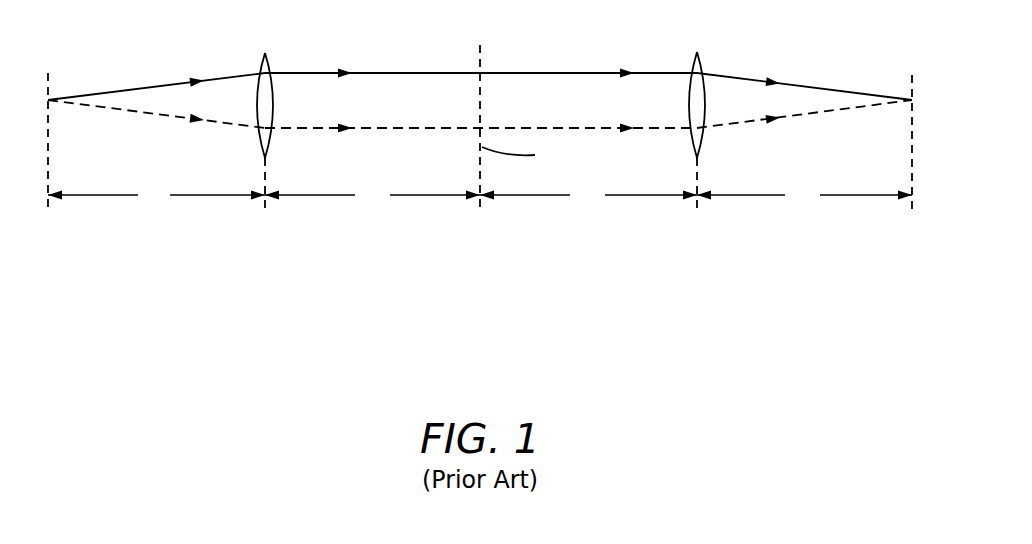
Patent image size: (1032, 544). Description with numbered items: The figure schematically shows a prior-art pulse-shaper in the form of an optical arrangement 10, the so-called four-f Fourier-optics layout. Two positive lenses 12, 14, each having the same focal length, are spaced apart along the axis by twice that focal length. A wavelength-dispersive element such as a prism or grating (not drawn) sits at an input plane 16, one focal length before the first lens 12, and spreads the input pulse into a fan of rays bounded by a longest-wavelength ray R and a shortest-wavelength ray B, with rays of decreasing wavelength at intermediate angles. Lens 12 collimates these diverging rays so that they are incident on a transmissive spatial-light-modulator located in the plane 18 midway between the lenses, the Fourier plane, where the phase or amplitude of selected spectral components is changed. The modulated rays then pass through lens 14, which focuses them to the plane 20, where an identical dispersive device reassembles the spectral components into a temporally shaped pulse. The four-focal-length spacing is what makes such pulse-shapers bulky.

The optical arrangement 10 is at (392, 262).
The positive lens 12 is at (258, 136).
The positive lens 14 is at (703, 142).
The input plane 16 is at (52, 118).
The plane 18 is at (477, 168).
The plane 20 is at (910, 118).
The longest-wavelength ray R is at (177, 80).
The shortest-wavelength ray B is at (145, 113).